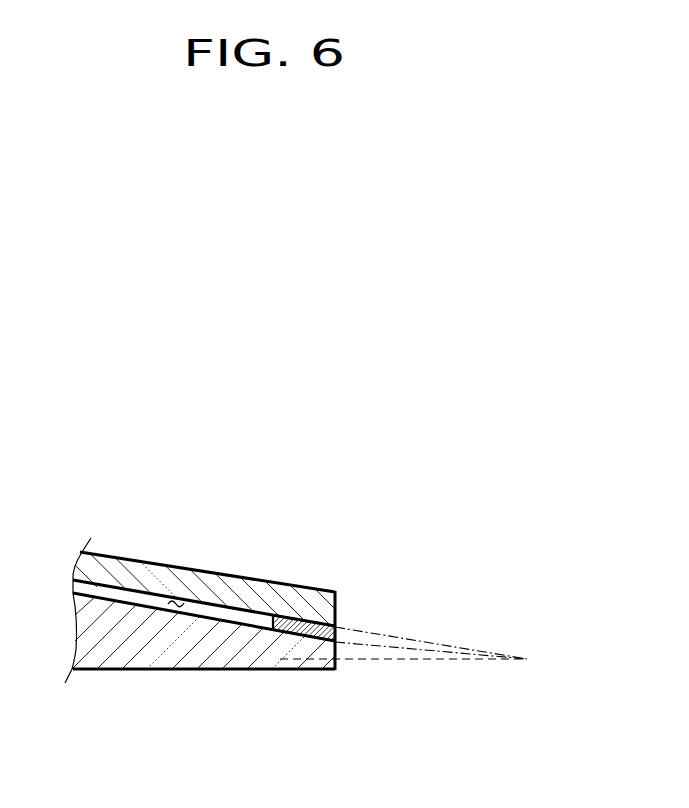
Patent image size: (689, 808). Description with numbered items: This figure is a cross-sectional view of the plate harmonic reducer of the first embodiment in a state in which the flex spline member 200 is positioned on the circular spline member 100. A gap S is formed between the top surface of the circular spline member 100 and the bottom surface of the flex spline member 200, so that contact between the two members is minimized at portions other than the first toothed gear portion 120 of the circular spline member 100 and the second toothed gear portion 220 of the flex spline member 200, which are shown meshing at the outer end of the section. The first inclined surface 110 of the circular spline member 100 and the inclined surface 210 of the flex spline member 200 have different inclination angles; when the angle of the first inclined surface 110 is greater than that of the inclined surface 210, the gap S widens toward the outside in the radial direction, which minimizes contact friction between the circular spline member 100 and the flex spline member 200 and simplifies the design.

The circular spline member 100 is at (133, 671).
The first inclined surface 110 is at (205, 617).
The flex spline member 200 is at (150, 555).
The (2-1)-th inclined surface 210 is at (245, 609).
The first toothed gear portion 120 is at (362, 596).
The second toothed gear portion 220 is at (311, 620).
The gap S is at (181, 597).